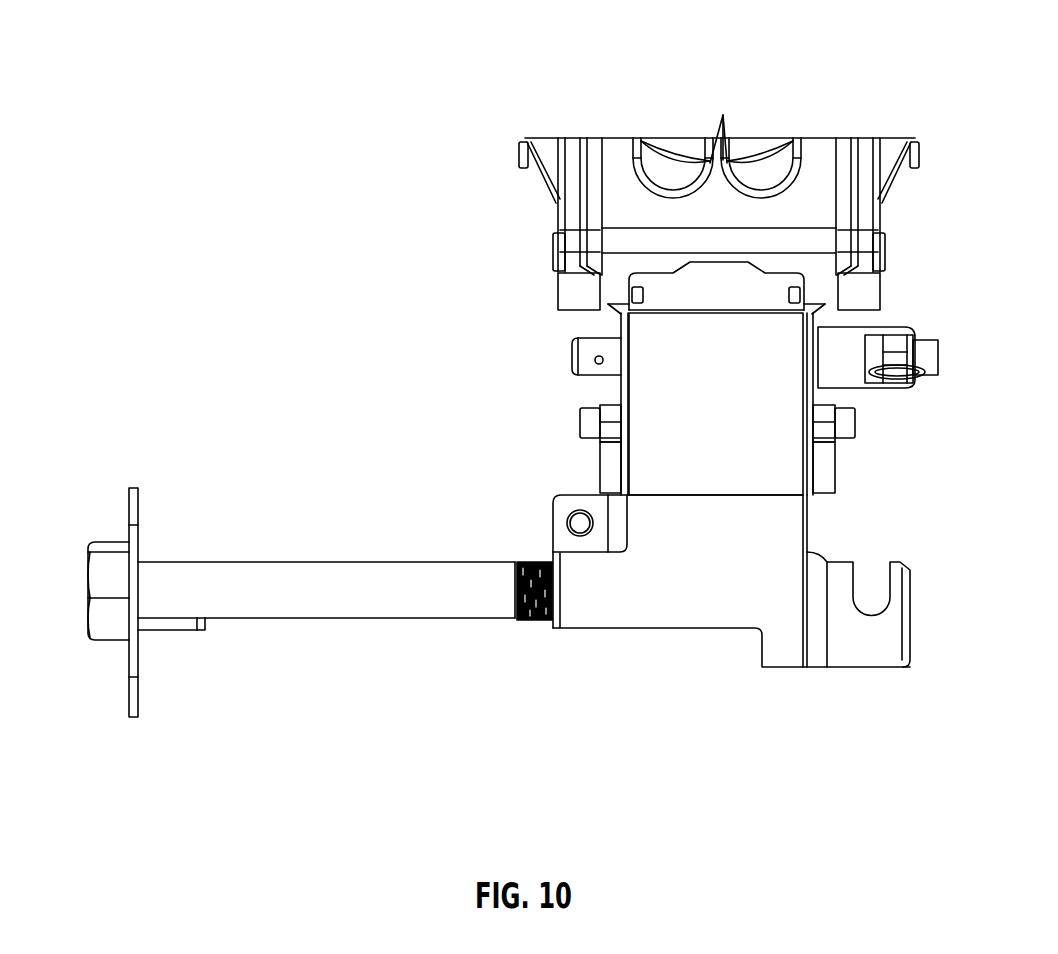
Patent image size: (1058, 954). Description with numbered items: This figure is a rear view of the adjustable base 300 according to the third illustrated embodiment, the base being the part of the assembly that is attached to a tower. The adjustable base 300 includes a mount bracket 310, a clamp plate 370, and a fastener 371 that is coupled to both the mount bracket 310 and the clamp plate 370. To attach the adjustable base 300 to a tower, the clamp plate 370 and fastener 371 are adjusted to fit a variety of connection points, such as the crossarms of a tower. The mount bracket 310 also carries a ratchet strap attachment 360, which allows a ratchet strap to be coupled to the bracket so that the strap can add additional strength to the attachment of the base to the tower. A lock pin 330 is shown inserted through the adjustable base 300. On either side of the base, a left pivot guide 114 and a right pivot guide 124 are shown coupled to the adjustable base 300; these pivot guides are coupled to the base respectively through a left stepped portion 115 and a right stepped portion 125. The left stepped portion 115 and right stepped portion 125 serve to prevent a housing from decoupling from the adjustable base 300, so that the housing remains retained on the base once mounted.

The adjustable base 300 is at (150, 50).
The lock pin 330 is at (572, 361).
The right pivot guide 124 is at (598, 470).
The right stepped portion 125 is at (622, 462).
The left stepped portion 115 is at (815, 481).
The left pivot guide 114 is at (840, 473).
The mount bracket 310 is at (655, 630).
The ratchet strap attachment 360 is at (868, 655).
The clamp plate 370 is at (132, 718).
The fastener 371 is at (372, 605).